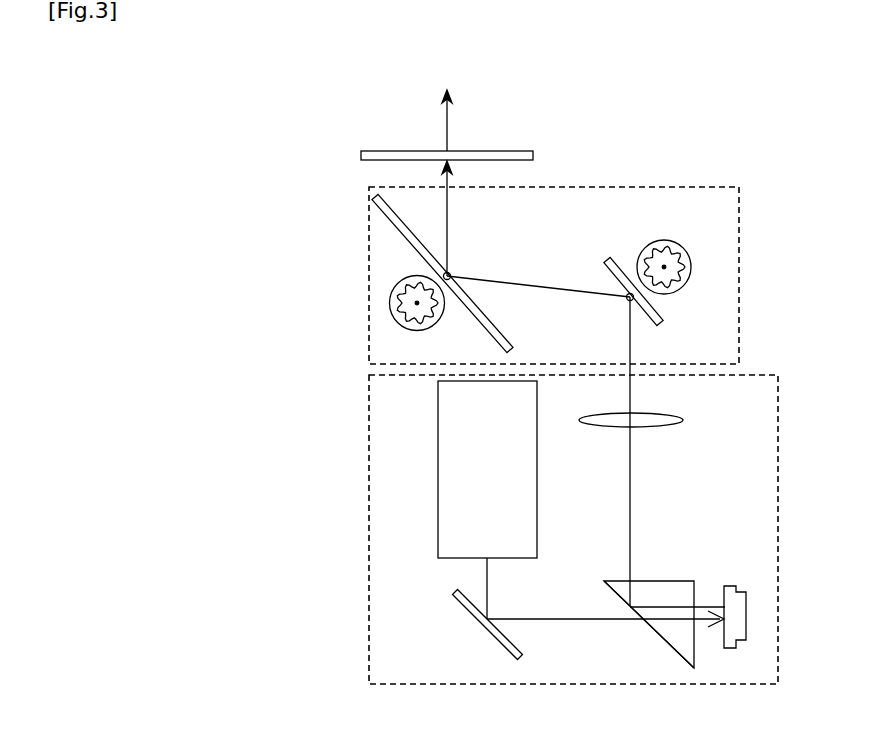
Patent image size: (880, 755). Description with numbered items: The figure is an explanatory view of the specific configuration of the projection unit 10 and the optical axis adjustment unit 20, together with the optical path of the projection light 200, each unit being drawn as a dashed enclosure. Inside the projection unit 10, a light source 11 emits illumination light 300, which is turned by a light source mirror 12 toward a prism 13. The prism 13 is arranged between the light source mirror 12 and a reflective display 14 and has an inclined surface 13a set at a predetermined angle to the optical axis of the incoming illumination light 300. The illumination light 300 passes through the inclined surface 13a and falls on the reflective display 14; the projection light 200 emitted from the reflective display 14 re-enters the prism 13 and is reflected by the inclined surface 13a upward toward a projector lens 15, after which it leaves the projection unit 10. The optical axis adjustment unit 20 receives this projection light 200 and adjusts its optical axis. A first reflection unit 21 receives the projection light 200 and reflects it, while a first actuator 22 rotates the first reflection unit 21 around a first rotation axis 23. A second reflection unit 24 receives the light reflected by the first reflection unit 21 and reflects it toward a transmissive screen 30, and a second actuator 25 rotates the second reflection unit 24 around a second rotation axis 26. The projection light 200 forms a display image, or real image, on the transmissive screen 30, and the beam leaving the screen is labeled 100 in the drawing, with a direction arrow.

The projection unit 10 is at (768, 375).
The light source 11 is at (438, 501).
The light source mirror 12 is at (488, 632).
The prism 13 is at (619, 580).
The inclined surface 13a is at (652, 630).
The reflective display 14 is at (737, 590).
The projector lens 15 is at (659, 416).
The optical axis adjustment unit 20 is at (704, 186).
The first reflection unit 21 is at (609, 260).
The first actuator 22 is at (672, 294).
The first rotation axis 23 is at (628, 300).
The second reflection unit 24 is at (506, 334).
The second actuator 25 is at (426, 330).
The second rotation axis 26 is at (451, 273).
The transmissive screen 30 is at (388, 150).
The emitted light beam 100 is at (449, 118).
The projection light 200 is at (518, 284).
The illumination light 300 is at (560, 620).